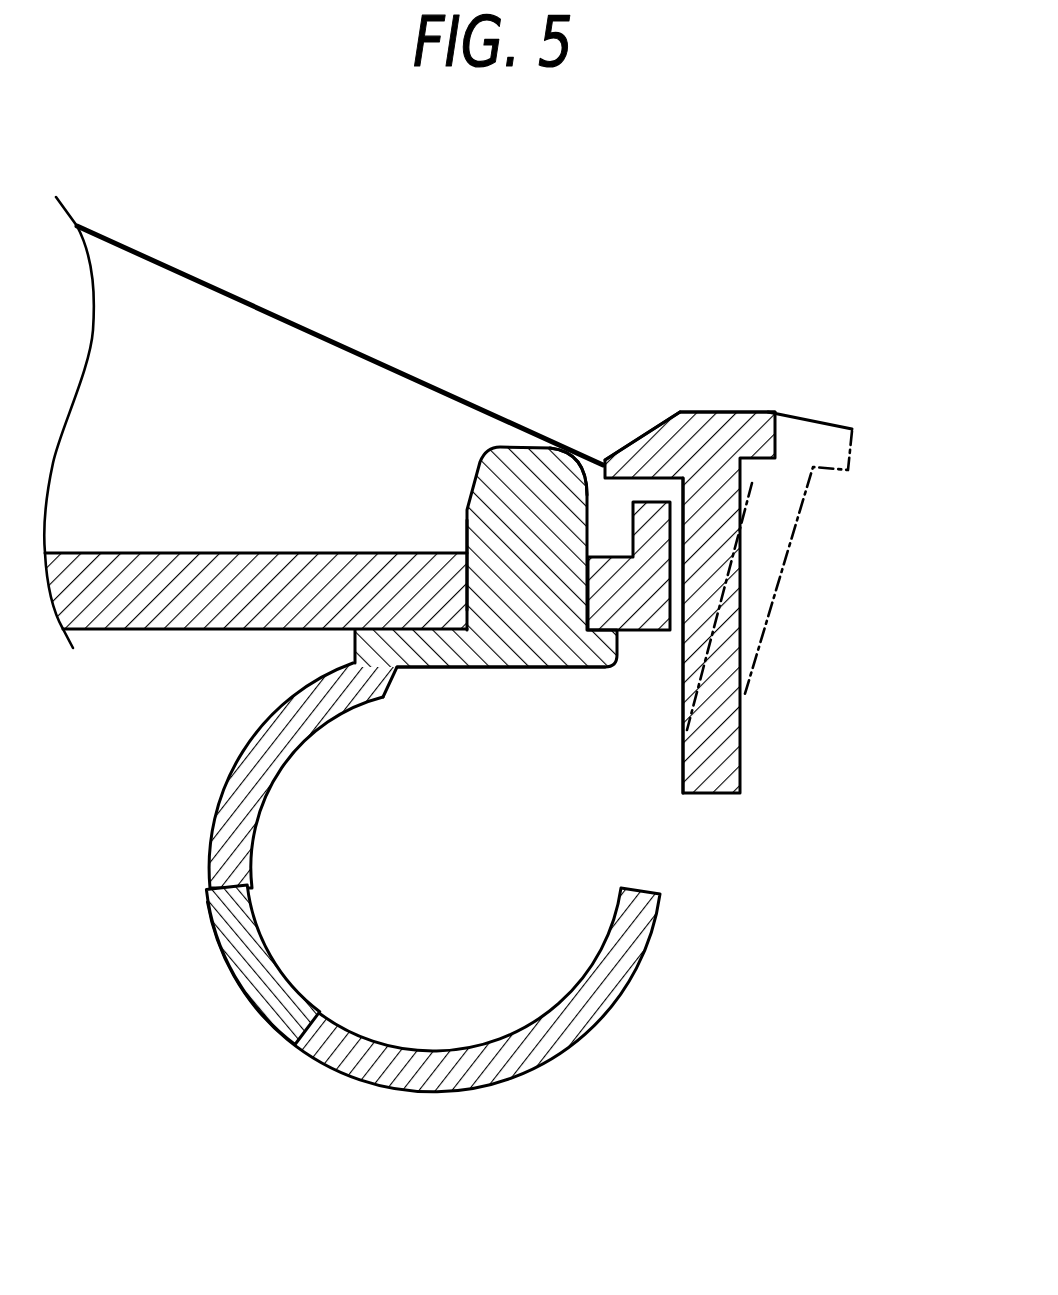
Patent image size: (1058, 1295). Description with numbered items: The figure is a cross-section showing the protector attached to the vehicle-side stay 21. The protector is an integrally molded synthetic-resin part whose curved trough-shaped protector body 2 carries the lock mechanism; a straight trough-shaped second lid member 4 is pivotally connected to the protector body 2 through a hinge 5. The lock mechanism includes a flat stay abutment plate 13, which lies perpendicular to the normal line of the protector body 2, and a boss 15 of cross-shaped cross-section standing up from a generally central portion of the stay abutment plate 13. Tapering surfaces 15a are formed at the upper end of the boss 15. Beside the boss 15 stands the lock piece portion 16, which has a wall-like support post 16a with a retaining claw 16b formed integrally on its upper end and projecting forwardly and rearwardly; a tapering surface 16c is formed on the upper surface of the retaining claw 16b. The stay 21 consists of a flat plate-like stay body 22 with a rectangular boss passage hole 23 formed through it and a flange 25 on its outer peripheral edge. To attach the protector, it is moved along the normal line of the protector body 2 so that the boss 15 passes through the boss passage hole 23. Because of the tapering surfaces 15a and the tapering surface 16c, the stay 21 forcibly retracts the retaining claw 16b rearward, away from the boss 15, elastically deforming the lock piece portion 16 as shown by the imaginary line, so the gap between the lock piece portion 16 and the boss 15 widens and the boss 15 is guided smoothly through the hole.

The protector body 2 is at (232, 780).
The second lid member 4 is at (325, 1048).
The hinge 5 is at (207, 887).
The stay abutment plate 13 is at (442, 657).
The boss 15 is at (493, 425).
The tapering surfaces 15a is at (580, 478).
The lock piece portion 16 is at (753, 522).
The support post 16a is at (681, 668).
The retaining claw 16b is at (813, 417).
The tapering surface 16c is at (650, 428).
The vehicle-side stay 21 is at (486, 508).
The stay body 22 is at (90, 605).
The boss passage hole 23 is at (483, 580).
The flange 25 is at (180, 322).